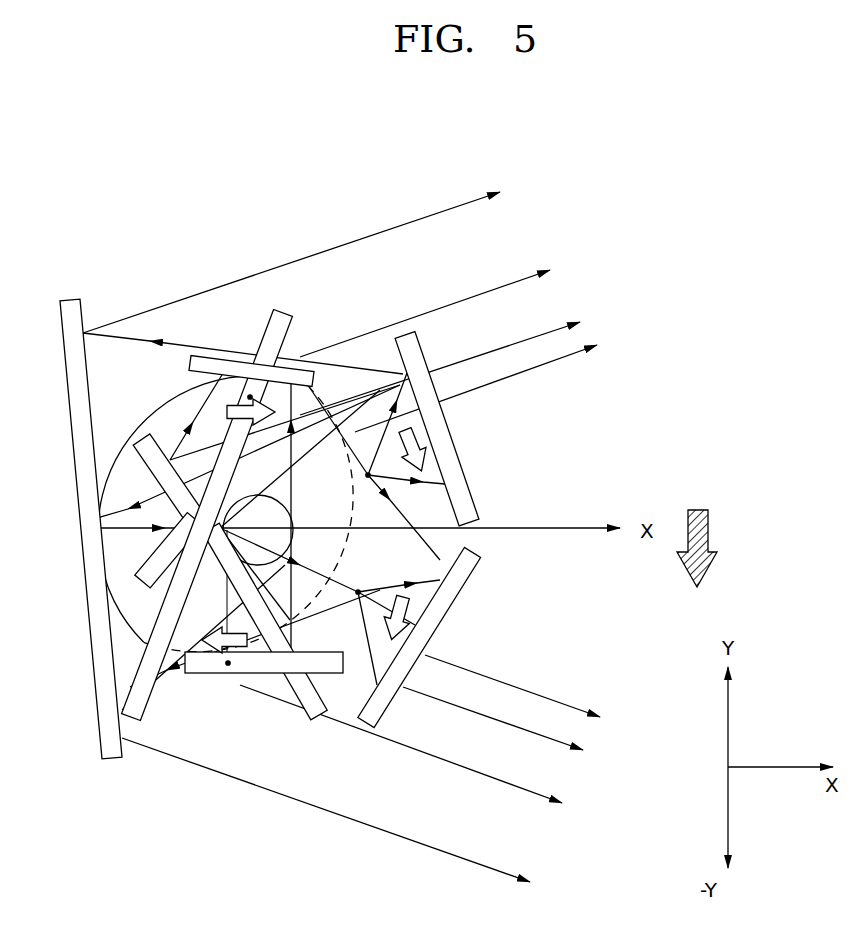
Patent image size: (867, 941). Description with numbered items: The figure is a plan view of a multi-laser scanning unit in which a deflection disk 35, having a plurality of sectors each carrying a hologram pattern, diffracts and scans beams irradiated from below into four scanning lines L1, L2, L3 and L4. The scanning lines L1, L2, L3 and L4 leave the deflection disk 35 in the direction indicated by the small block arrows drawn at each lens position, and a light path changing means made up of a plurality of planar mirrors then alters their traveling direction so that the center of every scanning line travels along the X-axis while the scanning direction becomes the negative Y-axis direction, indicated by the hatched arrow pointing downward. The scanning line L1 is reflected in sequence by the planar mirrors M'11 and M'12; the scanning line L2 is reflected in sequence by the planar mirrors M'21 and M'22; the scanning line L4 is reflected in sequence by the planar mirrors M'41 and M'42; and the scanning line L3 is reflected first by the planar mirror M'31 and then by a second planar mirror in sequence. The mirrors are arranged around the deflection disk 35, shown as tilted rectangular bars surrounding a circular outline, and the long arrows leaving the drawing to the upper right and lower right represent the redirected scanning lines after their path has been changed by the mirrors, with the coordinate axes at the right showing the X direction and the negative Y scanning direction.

The planar mirror M'11 is at (251, 303).
The planar mirror M'12 is at (155, 449).
The planar mirror M'21 is at (472, 429).
The planar mirror M'22 is at (108, 556).
The planar mirror M'31 is at (288, 519).
The planar mirror M'41 is at (268, 648).
The planar mirror M'42 is at (157, 567).
The scanning line L1 is at (227, 413).
The scanning line L2 is at (413, 433).
The scanning line L3 is at (392, 612).
The scanning line L4 is at (228, 664).
The deflection disk 35 is at (142, 562).